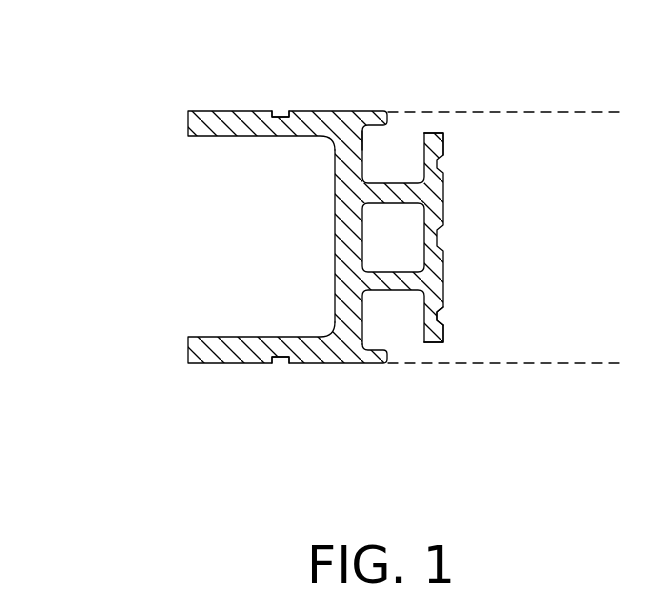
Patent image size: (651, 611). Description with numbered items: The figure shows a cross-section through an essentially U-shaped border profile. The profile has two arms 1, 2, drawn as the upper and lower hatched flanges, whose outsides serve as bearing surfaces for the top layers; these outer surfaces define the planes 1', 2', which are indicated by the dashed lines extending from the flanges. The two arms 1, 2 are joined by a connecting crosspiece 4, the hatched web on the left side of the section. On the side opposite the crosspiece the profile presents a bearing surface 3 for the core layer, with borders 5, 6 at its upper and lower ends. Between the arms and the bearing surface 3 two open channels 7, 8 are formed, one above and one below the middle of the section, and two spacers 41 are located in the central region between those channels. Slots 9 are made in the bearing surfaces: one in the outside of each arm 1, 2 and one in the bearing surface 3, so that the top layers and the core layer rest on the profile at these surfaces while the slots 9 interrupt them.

The arm 1 is at (252, 86).
The arm 2 is at (258, 387).
The bearing surface 3 is at (442, 205).
The connecting crosspiece 4 is at (336, 257).
The border 5 is at (441, 133).
The border 6 is at (436, 342).
The open channel 7 is at (395, 156).
The open channel 8 is at (394, 328).
The slot 9 is at (283, 111).
The spacer 41 is at (392, 200).
The plane 1' is at (519, 112).
The plane 2' is at (519, 363).